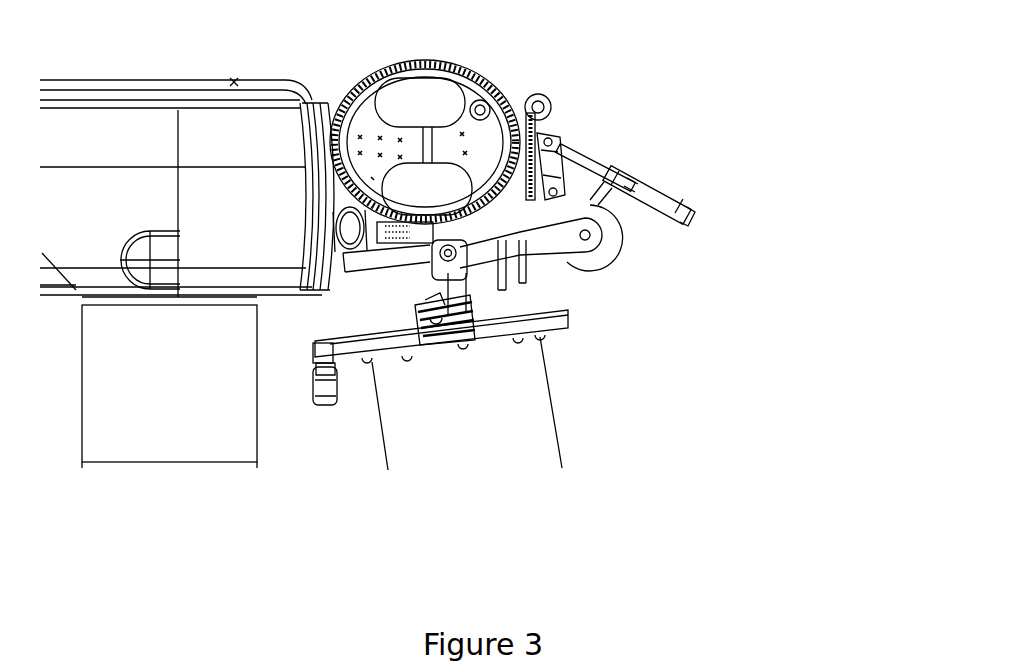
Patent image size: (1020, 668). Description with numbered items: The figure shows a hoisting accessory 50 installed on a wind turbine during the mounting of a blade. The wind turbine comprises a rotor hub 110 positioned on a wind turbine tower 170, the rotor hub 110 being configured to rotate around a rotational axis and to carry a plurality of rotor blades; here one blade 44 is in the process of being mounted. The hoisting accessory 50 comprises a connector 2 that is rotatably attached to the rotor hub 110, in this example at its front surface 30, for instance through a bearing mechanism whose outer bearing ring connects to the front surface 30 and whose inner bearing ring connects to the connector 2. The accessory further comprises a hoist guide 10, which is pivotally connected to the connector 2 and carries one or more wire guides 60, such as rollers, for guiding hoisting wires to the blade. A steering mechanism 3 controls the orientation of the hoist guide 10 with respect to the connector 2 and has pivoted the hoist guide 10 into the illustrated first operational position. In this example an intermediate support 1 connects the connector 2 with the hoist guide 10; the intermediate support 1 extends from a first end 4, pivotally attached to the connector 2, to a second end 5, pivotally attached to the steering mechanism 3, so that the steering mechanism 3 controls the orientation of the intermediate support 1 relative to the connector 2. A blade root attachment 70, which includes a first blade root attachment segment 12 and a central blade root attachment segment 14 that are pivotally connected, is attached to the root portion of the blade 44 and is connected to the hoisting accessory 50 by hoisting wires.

The intermediate support 1 is at (627, 233).
The connector 2 is at (527, 100).
The steering mechanism 3 is at (598, 153).
The first end 4 is at (553, 187).
The second end 5 is at (642, 173).
The hoist guide 10 is at (528, 248).
The first blade root attachment segment 12 is at (372, 365).
The central blade root attachment segment 14 is at (470, 350).
The front surface 30 is at (521, 110).
The blade 44 is at (537, 457).
The hoisting accessory 50 is at (743, 192).
The wire guide 60 is at (440, 268).
The blade root attachment 70 is at (548, 332).
The rotor hub 110 is at (347, 68).
The wind turbine tower 170 is at (142, 420).